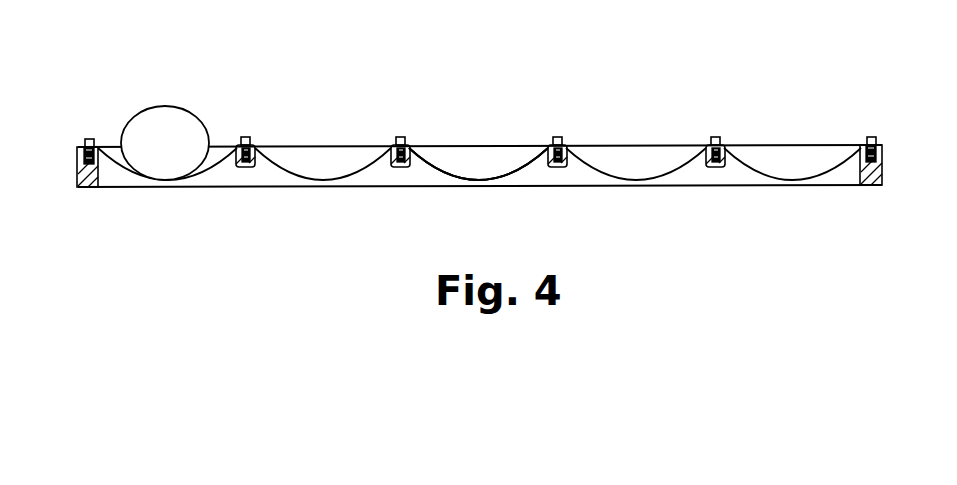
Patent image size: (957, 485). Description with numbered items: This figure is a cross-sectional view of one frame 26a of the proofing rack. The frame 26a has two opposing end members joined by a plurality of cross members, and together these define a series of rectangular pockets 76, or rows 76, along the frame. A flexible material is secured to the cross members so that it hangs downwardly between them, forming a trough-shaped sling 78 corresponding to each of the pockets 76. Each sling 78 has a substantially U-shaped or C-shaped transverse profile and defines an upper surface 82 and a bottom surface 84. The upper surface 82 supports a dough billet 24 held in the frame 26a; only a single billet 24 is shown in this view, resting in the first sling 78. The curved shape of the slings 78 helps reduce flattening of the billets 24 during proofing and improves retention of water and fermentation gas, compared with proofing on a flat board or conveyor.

The frame 26a is at (817, 45).
The billet 24 is at (148, 107).
The pocket 76 is at (226, 130).
The sling 78 is at (205, 176).
The upper surface 82 is at (440, 167).
The bottom surface 84 is at (455, 183).